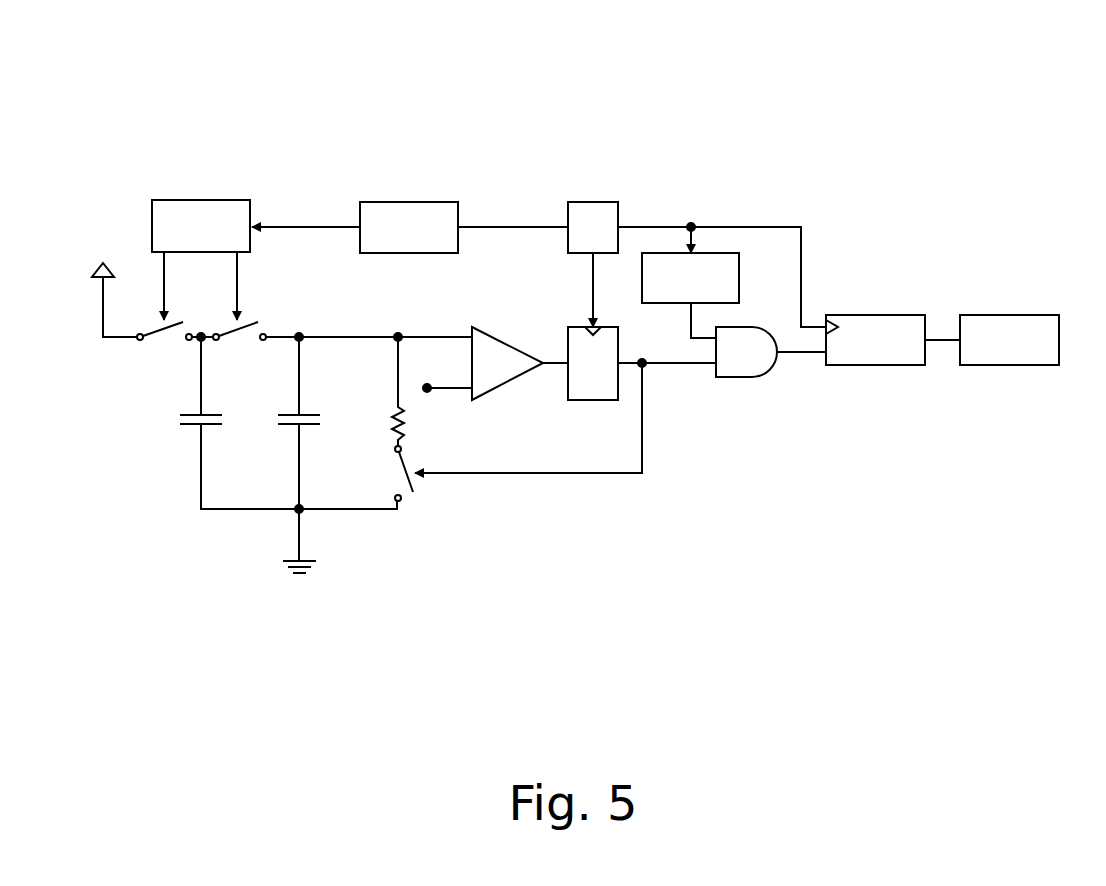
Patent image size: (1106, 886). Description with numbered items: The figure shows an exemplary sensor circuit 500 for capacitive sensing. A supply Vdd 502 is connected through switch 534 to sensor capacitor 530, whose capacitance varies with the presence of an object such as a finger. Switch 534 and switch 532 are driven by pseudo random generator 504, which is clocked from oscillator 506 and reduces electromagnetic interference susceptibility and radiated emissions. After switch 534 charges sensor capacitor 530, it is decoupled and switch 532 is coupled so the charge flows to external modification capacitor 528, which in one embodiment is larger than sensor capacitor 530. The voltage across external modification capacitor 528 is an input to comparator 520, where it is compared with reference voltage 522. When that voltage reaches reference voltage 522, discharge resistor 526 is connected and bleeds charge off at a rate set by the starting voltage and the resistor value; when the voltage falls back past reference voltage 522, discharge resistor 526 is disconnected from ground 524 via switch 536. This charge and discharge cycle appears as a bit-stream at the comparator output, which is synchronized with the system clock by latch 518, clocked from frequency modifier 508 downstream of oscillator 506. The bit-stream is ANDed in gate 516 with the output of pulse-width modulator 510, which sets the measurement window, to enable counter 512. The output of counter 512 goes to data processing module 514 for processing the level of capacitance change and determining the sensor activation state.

The sensor circuit 500 is at (72, 75).
The Vdd 502 is at (111, 281).
The pseudo random generator 504 is at (205, 200).
The oscillator 506 is at (400, 202).
The frequency modifier 508 is at (588, 202).
The pulse-width modulator 510 is at (739, 276).
The counter 512 is at (872, 315).
The data processing module 514 is at (1040, 315).
The gate 516 is at (742, 378).
The latch 518 is at (596, 400).
The comparator 520 is at (505, 327).
The reference voltage 522 is at (427, 394).
The ground signal 524 is at (314, 571).
The discharge resistor 526 is at (353, 428).
The external modification capacitor 528 is at (245, 438).
The sensor capacitor 530 is at (149, 424).
The switch 532 is at (246, 345).
The switch 534 is at (172, 345).
The switch 536 is at (418, 488).